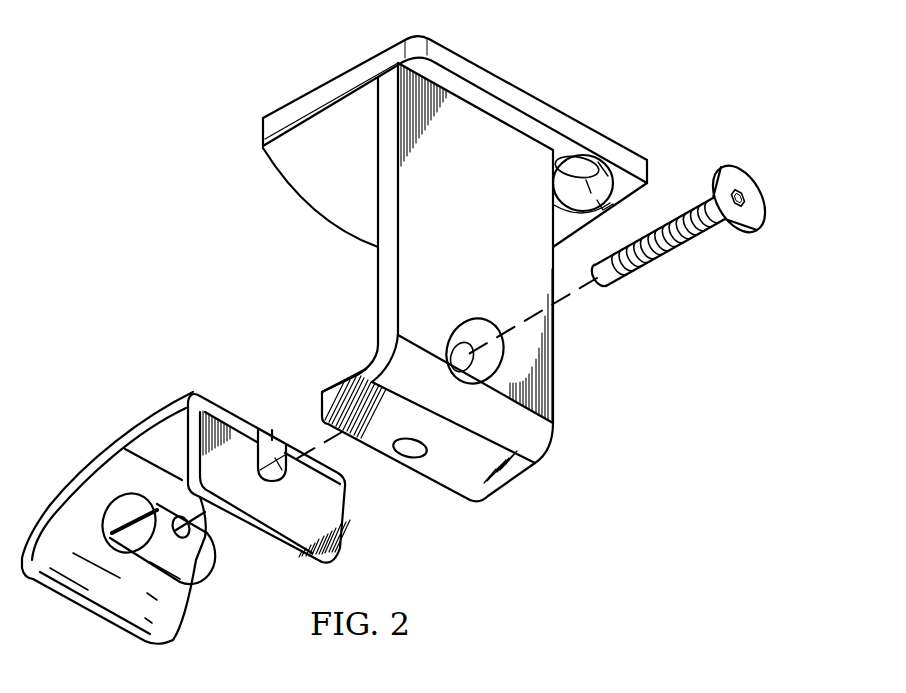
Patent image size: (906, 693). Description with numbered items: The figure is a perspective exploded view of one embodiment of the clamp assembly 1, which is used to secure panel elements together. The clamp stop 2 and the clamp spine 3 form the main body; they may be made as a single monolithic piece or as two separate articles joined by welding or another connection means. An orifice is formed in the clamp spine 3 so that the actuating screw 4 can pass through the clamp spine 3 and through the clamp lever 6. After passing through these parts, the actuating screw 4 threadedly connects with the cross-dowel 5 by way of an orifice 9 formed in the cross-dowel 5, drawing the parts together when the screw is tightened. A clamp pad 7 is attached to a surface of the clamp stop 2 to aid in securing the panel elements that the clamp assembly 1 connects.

The clamp assembly 1 is at (589, 52).
The clamp stop 2 is at (490, 82).
The clamp spine 3 is at (517, 155).
The actuating screw 4 is at (668, 258).
The cross-dowel 5 is at (148, 572).
The clamp lever 6 is at (83, 470).
The clamp pad 7 is at (284, 170).
The orifice 9 is at (200, 527).